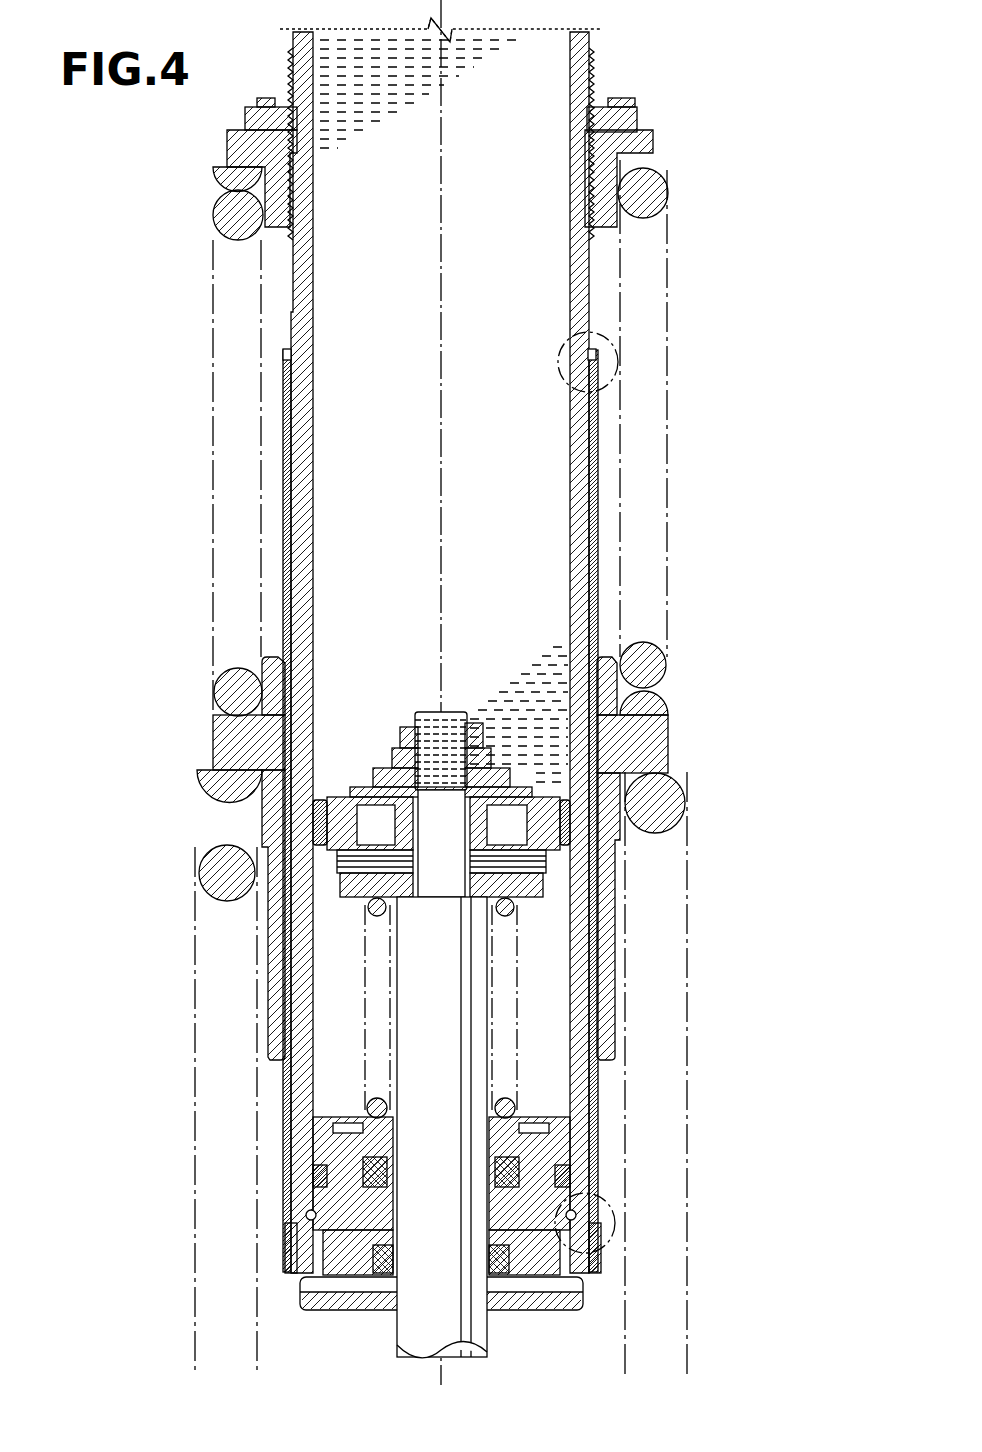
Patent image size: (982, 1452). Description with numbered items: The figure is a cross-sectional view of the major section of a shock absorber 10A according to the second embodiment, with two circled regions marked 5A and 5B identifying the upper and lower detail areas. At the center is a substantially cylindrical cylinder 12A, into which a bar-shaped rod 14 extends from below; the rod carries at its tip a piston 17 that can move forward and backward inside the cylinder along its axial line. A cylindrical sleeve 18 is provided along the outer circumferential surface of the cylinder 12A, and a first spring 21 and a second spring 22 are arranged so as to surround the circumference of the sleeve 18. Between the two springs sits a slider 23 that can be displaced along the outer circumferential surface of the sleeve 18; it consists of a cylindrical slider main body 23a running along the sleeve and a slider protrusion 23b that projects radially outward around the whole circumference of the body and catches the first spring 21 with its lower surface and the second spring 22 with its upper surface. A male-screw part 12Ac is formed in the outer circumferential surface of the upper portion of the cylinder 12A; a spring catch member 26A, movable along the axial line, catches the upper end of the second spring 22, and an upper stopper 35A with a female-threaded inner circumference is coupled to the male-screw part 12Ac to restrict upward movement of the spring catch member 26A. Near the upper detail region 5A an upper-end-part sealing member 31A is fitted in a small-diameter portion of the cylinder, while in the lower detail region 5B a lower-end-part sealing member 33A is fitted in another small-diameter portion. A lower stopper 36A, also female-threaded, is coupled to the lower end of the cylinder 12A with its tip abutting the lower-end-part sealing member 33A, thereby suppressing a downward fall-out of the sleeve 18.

The shock absorber 10A is at (808, 93).
The cylinder 12A is at (588, 43).
The male-screw part 12Ac is at (586, 80).
The rod 14 is at (492, 1330).
The piston 17 is at (325, 852).
The sleeve 18 is at (600, 542).
The first spring 21 is at (688, 968).
The second spring 22 is at (668, 462).
The slider 23 is at (514, 851).
The slider main body 23a is at (482, 915).
The slider protrusion 23b is at (668, 740).
The spring catch member 26A is at (653, 140).
The upper-end-part sealing member 31A is at (597, 353).
The lower-end-part sealing member 33A is at (598, 1215).
The upper stopper 35A is at (638, 108).
The lower stopper 36A is at (600, 1275).
The detail view 5A region 5A is at (606, 340).
The detail view 5B region 5B is at (606, 1200).